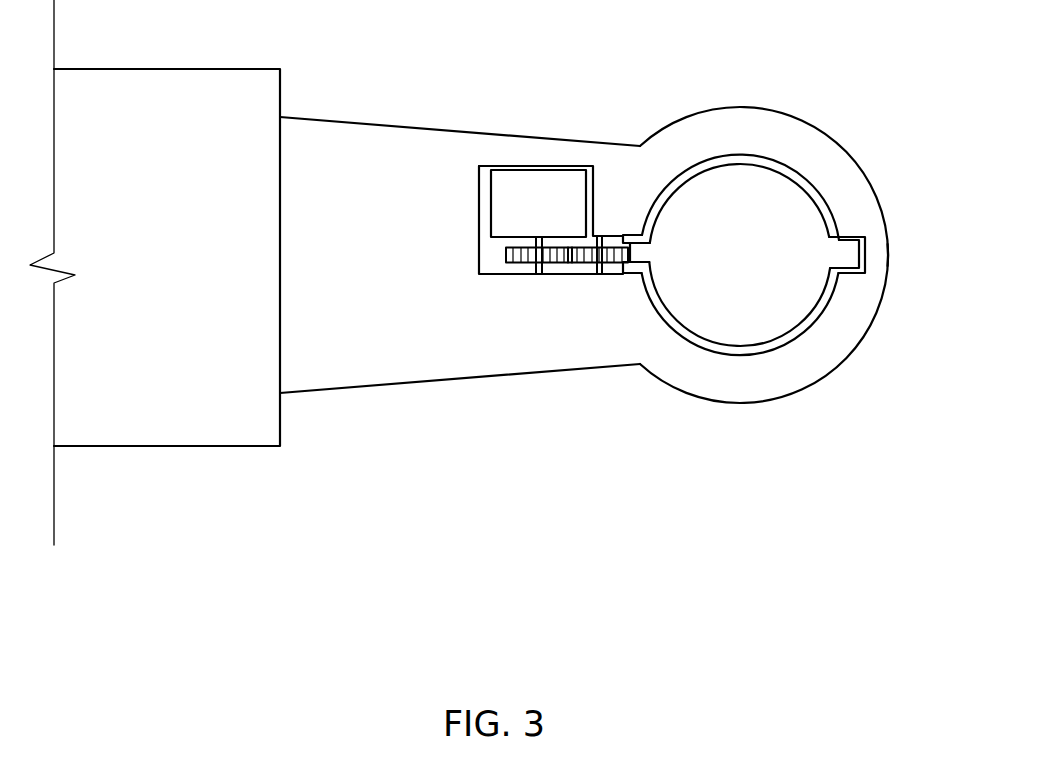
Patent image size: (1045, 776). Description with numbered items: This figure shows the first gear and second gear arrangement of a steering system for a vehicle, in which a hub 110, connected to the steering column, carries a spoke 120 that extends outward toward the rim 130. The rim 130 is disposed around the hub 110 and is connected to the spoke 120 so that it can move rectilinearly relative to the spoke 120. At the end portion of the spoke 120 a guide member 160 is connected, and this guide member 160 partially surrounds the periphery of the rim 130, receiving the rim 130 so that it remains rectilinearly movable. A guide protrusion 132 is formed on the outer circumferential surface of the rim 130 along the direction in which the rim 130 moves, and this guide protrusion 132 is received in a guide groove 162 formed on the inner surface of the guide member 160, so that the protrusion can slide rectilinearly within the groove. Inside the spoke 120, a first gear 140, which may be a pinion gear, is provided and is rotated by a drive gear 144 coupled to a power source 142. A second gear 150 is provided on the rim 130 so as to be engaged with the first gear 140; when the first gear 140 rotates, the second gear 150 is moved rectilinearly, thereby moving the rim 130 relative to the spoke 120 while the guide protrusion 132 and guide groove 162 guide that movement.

The hub 110 is at (195, 432).
The spoke 120 is at (427, 366).
The rim 130 is at (758, 330).
The guide protrusion 132 is at (848, 262).
The first gear 140 is at (588, 264).
The power source 142 is at (561, 198).
The drive gear 144 is at (526, 263).
The second gear 150 is at (636, 258).
The guide member 160 is at (763, 132).
The guide groove 162 is at (854, 241).